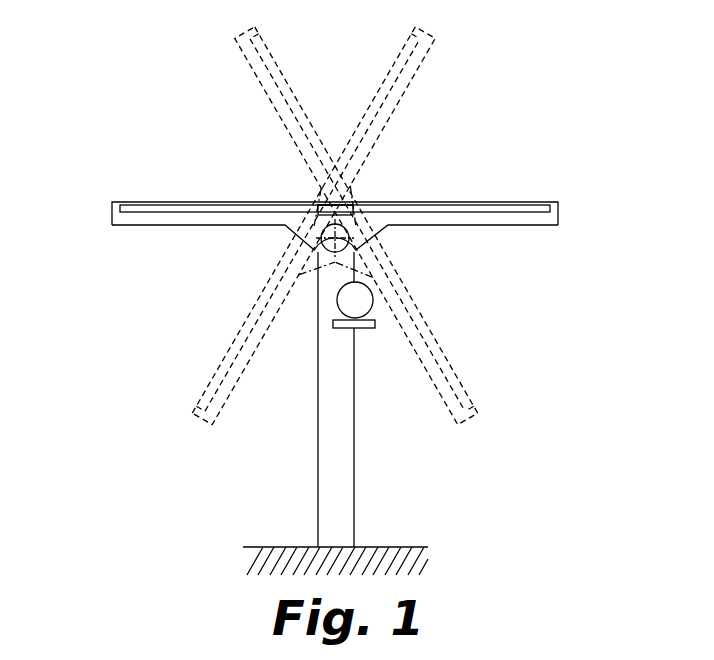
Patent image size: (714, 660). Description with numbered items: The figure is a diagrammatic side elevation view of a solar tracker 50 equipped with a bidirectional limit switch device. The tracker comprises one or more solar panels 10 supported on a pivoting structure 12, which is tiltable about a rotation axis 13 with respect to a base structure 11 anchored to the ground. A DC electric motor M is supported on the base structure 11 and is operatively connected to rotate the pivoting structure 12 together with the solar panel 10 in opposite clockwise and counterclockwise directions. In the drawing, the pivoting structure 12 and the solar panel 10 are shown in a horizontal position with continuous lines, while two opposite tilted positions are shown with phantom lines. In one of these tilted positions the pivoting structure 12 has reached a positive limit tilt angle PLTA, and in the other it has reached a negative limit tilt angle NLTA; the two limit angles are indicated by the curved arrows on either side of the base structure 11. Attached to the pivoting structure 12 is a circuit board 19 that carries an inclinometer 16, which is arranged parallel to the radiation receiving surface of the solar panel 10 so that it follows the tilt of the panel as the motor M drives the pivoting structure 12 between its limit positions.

The solar tracker 50 is at (176, 140).
The solar panel 10 is at (477, 203).
The base structure 11 is at (323, 478).
The pivoting structure 12 is at (215, 226).
The rotation axis 13 is at (349, 241).
The inclinometer 16 is at (330, 205).
The circuit board 19 is at (352, 205).
The DC electric motor M is at (356, 317).
The positive limit tilt angle PLTA is at (203, 374).
The negative limit tilt angle NLTA is at (528, 234).